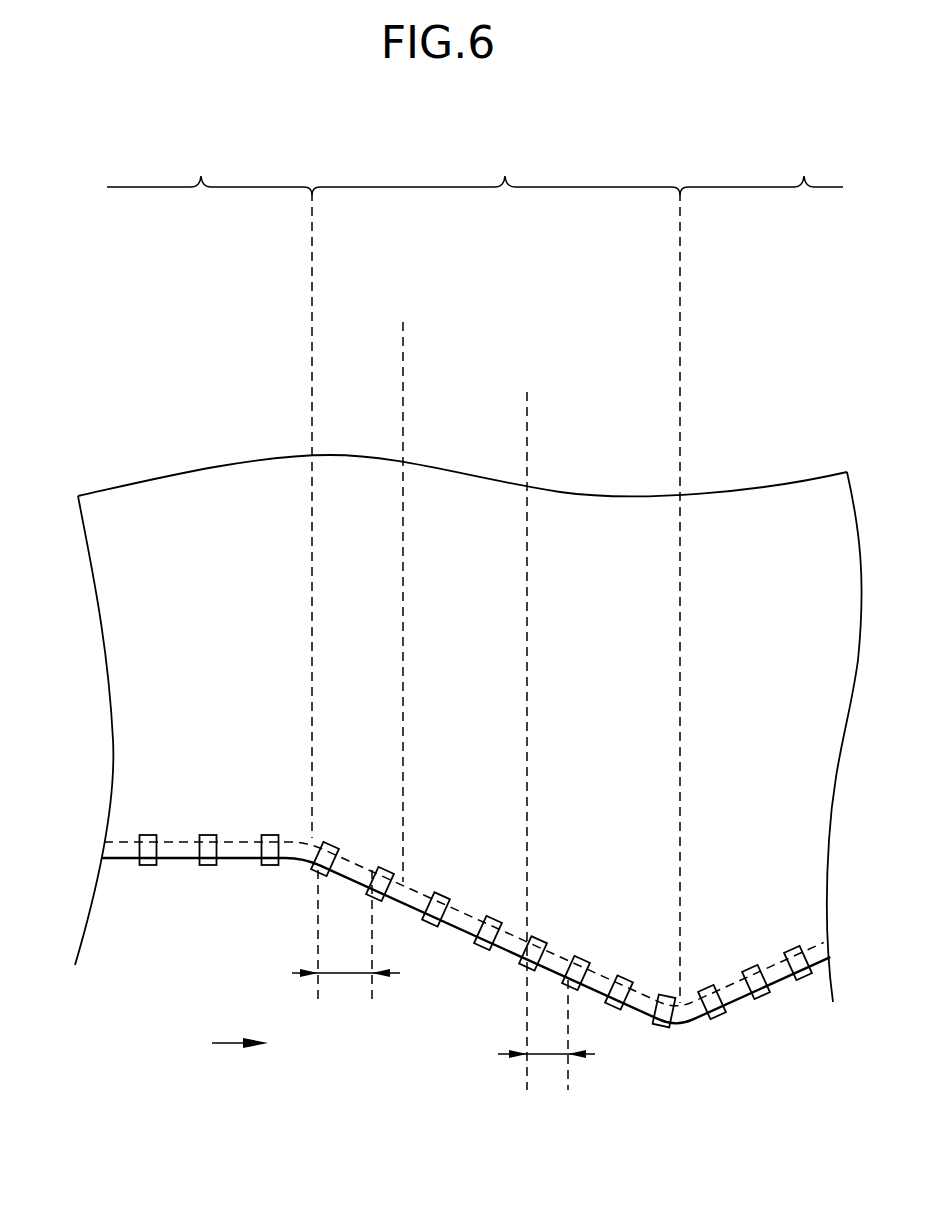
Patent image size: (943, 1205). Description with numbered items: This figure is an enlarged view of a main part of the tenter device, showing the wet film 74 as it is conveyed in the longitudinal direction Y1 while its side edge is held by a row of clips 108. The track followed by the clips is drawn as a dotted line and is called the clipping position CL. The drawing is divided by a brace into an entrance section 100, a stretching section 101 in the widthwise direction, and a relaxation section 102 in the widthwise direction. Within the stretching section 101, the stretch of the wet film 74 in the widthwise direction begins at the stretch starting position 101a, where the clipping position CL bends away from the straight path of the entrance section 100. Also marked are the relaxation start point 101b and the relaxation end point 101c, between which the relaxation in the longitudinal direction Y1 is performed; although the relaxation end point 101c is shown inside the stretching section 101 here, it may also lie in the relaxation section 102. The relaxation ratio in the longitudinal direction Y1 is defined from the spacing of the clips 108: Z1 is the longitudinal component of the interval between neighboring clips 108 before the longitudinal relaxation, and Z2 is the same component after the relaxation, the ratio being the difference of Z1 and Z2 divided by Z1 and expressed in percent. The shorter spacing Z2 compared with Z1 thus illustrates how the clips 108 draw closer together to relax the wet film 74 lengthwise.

The wet film 74 is at (226, 525).
The entrance section 100 is at (209, 169).
The stretching section 101 is at (496, 573).
The relaxation section 102 is at (761, 169).
The stretch starting position 101a is at (312, 392).
The relaxation start point 101b is at (403, 330).
The relaxation end point 101c is at (527, 392).
The clips 108 is at (148, 866).
The clipping position CL is at (136, 835).
The interval between neighboring clips before relaxation Z1 is at (346, 941).
The interval between neighboring clips after relaxation Z2 is at (546, 1038).
The longitudinal direction Y1 is at (218, 1048).